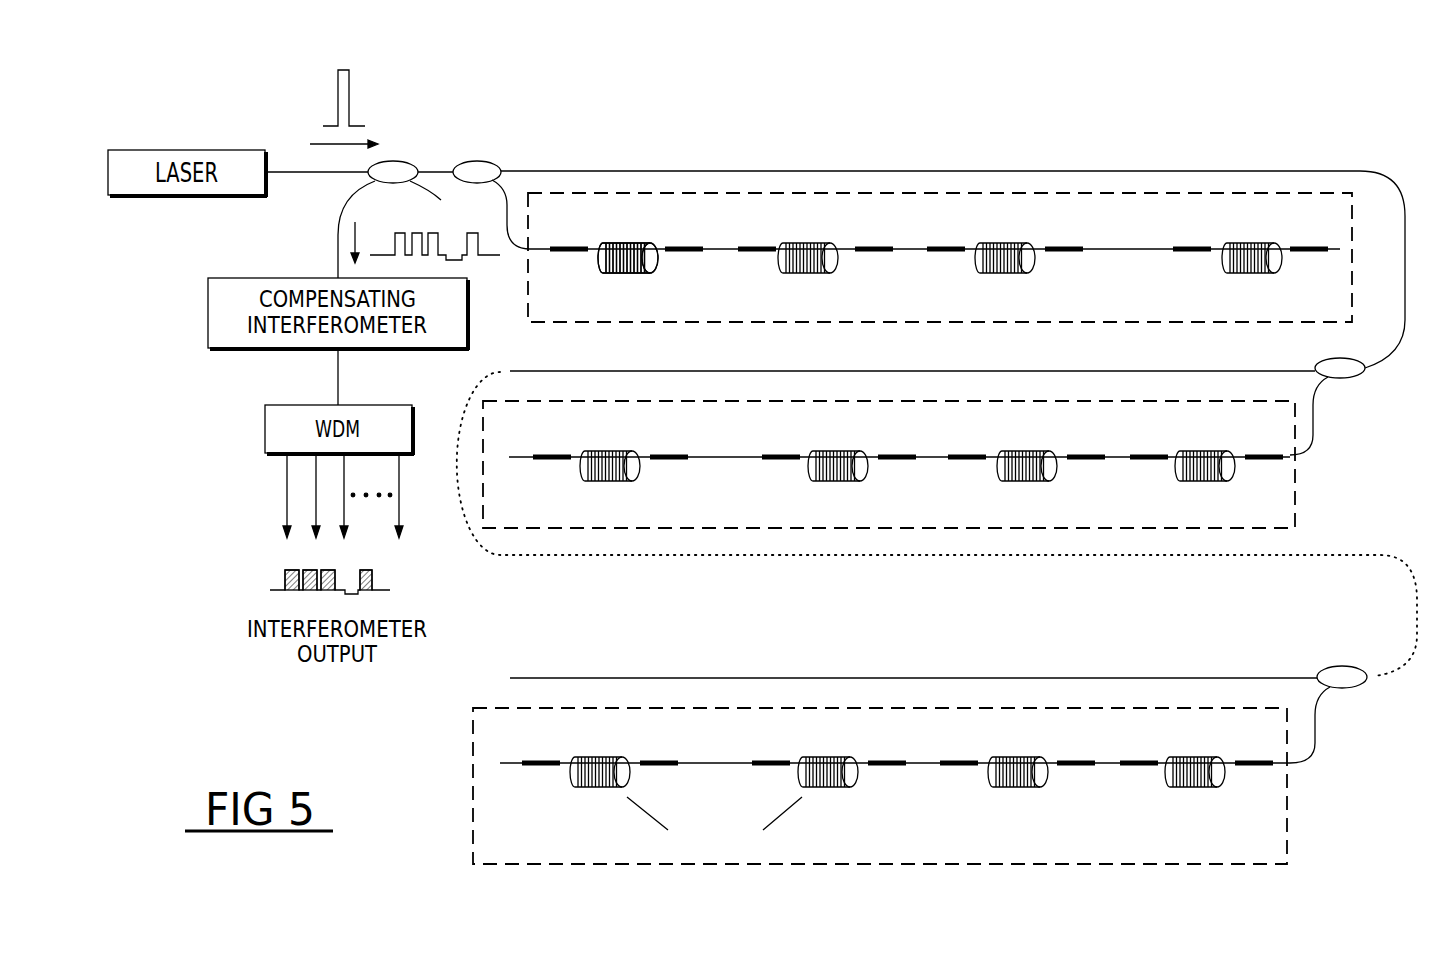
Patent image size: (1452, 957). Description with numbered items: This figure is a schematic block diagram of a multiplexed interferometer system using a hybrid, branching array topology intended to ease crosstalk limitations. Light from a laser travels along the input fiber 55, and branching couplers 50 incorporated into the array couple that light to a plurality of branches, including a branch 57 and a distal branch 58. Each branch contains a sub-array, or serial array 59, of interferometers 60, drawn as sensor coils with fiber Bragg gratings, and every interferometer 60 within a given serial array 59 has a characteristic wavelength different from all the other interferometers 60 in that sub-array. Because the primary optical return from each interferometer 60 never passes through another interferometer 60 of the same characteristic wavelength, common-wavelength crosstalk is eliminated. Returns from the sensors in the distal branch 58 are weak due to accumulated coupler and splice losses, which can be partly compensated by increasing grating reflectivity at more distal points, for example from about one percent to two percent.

The branching coupler 50 is at (477, 160).
The input fiber 55 is at (440, 168).
The branch 57 is at (1315, 410).
The distal branch 58 is at (1318, 722).
The sub-array (serial array) 59 is at (908, 323).
The interferometer 60 is at (617, 227).